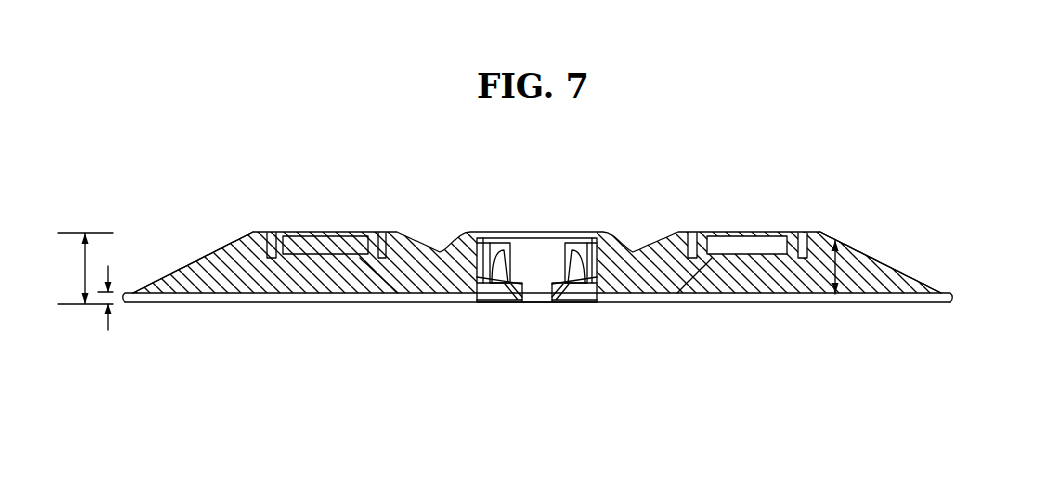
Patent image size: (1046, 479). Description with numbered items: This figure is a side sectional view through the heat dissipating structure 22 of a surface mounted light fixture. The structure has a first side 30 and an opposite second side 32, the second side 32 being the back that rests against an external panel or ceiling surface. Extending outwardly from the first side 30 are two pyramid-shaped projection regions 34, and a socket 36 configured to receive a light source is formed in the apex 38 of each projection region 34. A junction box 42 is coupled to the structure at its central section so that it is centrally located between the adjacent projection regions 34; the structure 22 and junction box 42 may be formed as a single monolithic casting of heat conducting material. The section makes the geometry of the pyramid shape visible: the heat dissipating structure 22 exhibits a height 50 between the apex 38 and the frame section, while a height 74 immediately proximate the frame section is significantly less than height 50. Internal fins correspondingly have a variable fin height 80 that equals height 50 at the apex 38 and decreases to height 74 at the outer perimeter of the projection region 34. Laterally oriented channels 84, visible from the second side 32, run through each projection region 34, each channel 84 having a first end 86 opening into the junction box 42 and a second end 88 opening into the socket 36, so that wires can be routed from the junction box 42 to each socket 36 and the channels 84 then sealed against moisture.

The heat dissipating structure 22 is at (332, 464).
The first side 30 is at (255, 103).
The second side 32 is at (256, 382).
The projection region 34 is at (207, 263).
The socket 36 is at (330, 243).
The apex 38 is at (265, 232).
The junction box 42 is at (615, 237).
The height 50 is at (85, 268).
The height 74 is at (108, 324).
The fin height 80 is at (838, 300).
The channel 84 is at (362, 294).
The first end 86 is at (472, 298).
The second end 88 is at (360, 258).